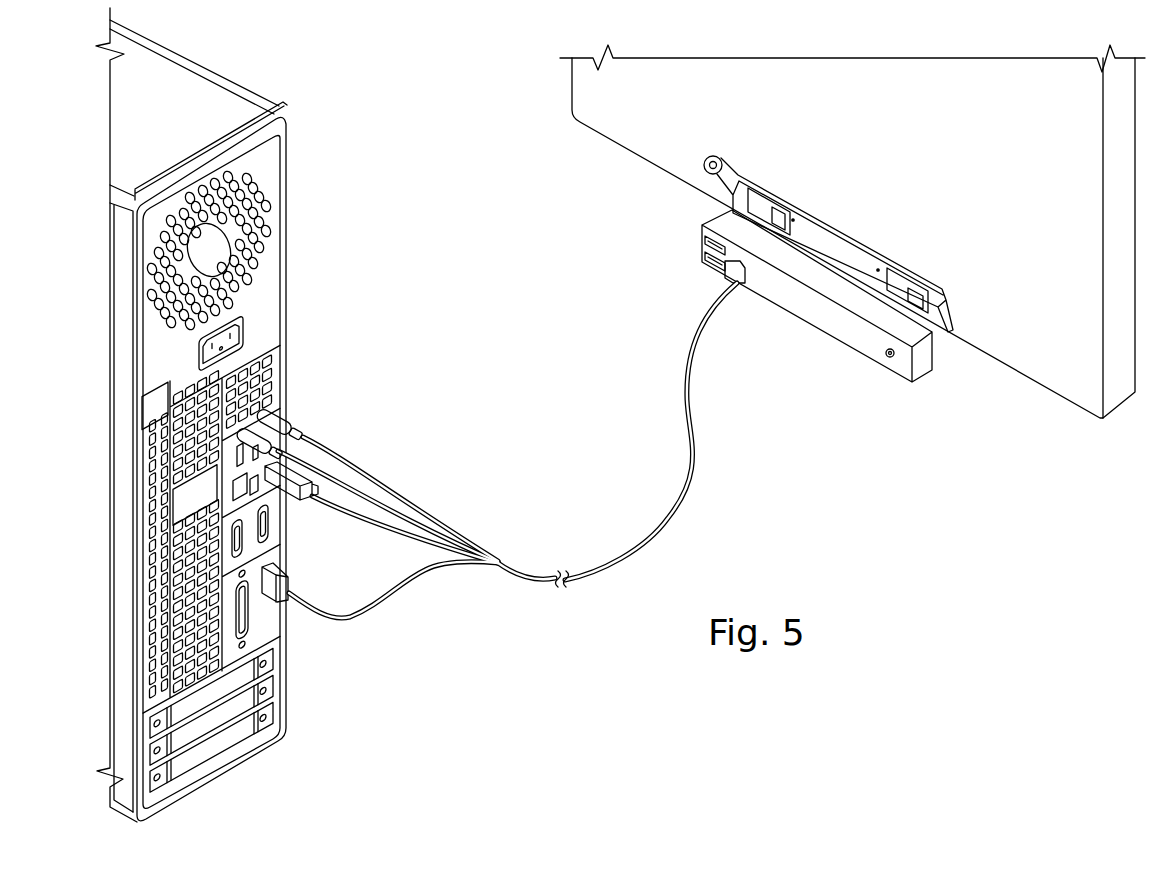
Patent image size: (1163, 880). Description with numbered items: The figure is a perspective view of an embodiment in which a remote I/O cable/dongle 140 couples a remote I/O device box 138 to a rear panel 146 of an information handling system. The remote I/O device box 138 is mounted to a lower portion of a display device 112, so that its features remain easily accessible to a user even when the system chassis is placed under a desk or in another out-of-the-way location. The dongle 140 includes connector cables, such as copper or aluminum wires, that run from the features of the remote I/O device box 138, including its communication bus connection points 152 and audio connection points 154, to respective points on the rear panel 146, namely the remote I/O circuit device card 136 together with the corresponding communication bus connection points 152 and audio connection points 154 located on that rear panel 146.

The display device 112 is at (653, 162).
The remote I/O circuit device card 136 is at (273, 653).
The remote I/O device box 138 is at (828, 333).
The remote I/O cable/dongle 140 is at (697, 443).
The rear panel 146 is at (205, 146).
The communication bus connection points 152 is at (293, 502).
The audio connection points 154 is at (307, 436).